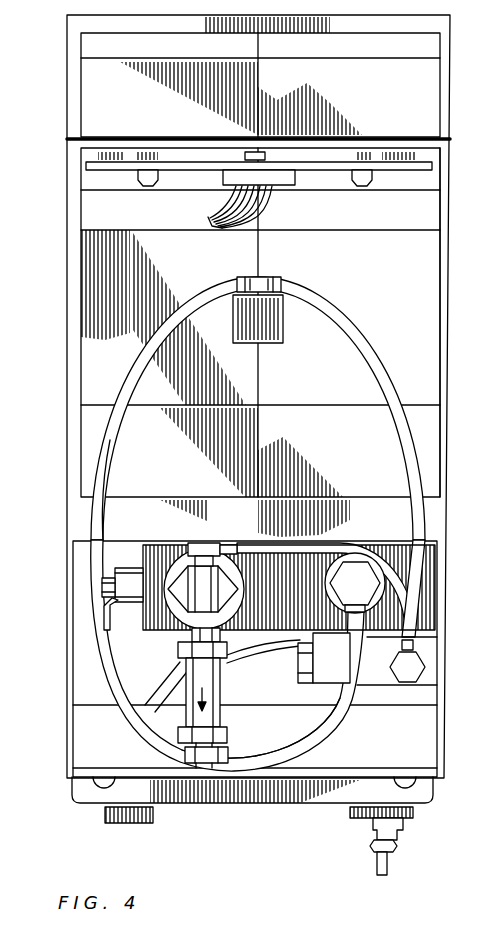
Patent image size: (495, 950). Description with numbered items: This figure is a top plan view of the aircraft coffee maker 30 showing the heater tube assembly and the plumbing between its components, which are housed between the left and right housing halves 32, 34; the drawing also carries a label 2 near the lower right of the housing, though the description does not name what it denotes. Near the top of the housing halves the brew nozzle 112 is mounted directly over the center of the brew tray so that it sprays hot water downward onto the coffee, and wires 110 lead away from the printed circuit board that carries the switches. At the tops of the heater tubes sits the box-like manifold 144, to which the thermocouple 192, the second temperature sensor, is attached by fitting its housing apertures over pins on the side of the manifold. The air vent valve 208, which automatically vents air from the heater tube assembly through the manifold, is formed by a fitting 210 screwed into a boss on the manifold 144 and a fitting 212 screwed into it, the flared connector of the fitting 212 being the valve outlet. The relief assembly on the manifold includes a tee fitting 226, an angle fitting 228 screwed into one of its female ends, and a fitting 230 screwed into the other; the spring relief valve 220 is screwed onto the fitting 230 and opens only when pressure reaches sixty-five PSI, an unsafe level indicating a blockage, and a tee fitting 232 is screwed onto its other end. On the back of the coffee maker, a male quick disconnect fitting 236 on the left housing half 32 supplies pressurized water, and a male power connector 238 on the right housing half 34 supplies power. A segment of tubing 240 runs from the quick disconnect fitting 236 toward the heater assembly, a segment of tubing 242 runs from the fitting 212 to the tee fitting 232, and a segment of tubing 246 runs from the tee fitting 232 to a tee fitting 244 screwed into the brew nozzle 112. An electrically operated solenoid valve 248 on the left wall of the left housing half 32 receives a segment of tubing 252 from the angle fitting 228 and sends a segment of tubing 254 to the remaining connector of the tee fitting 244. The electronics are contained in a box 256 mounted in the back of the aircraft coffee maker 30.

The beverage dispenser housing 2 is at (433, 798).
The aircraft coffee maker 30 is at (266, 818).
The left housing half 32 is at (450, 290).
The right housing half 34 is at (67, 290).
The wires 110 is at (278, 211).
The brew nozzle 112 is at (240, 318).
The manifold 144 is at (303, 562).
The thermocouple 192 is at (130, 556).
The air vent valve 208 is at (380, 568).
The fitting 210 is at (347, 585).
The fitting 212 is at (333, 567).
The spring relief valve 220 is at (180, 660).
The tee fitting 226 is at (193, 570).
The angle fitting 228 is at (200, 543).
The fitting 230 is at (185, 632).
The tee fitting 232 is at (206, 762).
The male quick disconnect fitting 236 is at (398, 856).
The male power connector 238 is at (107, 812).
The segment of tubing 240 is at (270, 660).
The segment of tubing 242 is at (330, 733).
The tee fitting 244 is at (272, 290).
The segment of tubing 246 is at (105, 458).
The solenoid valve 248 is at (382, 673).
The segment of tubing 252 is at (353, 545).
The segment of tubing 254 is at (350, 310).
The box 256 is at (345, 765).